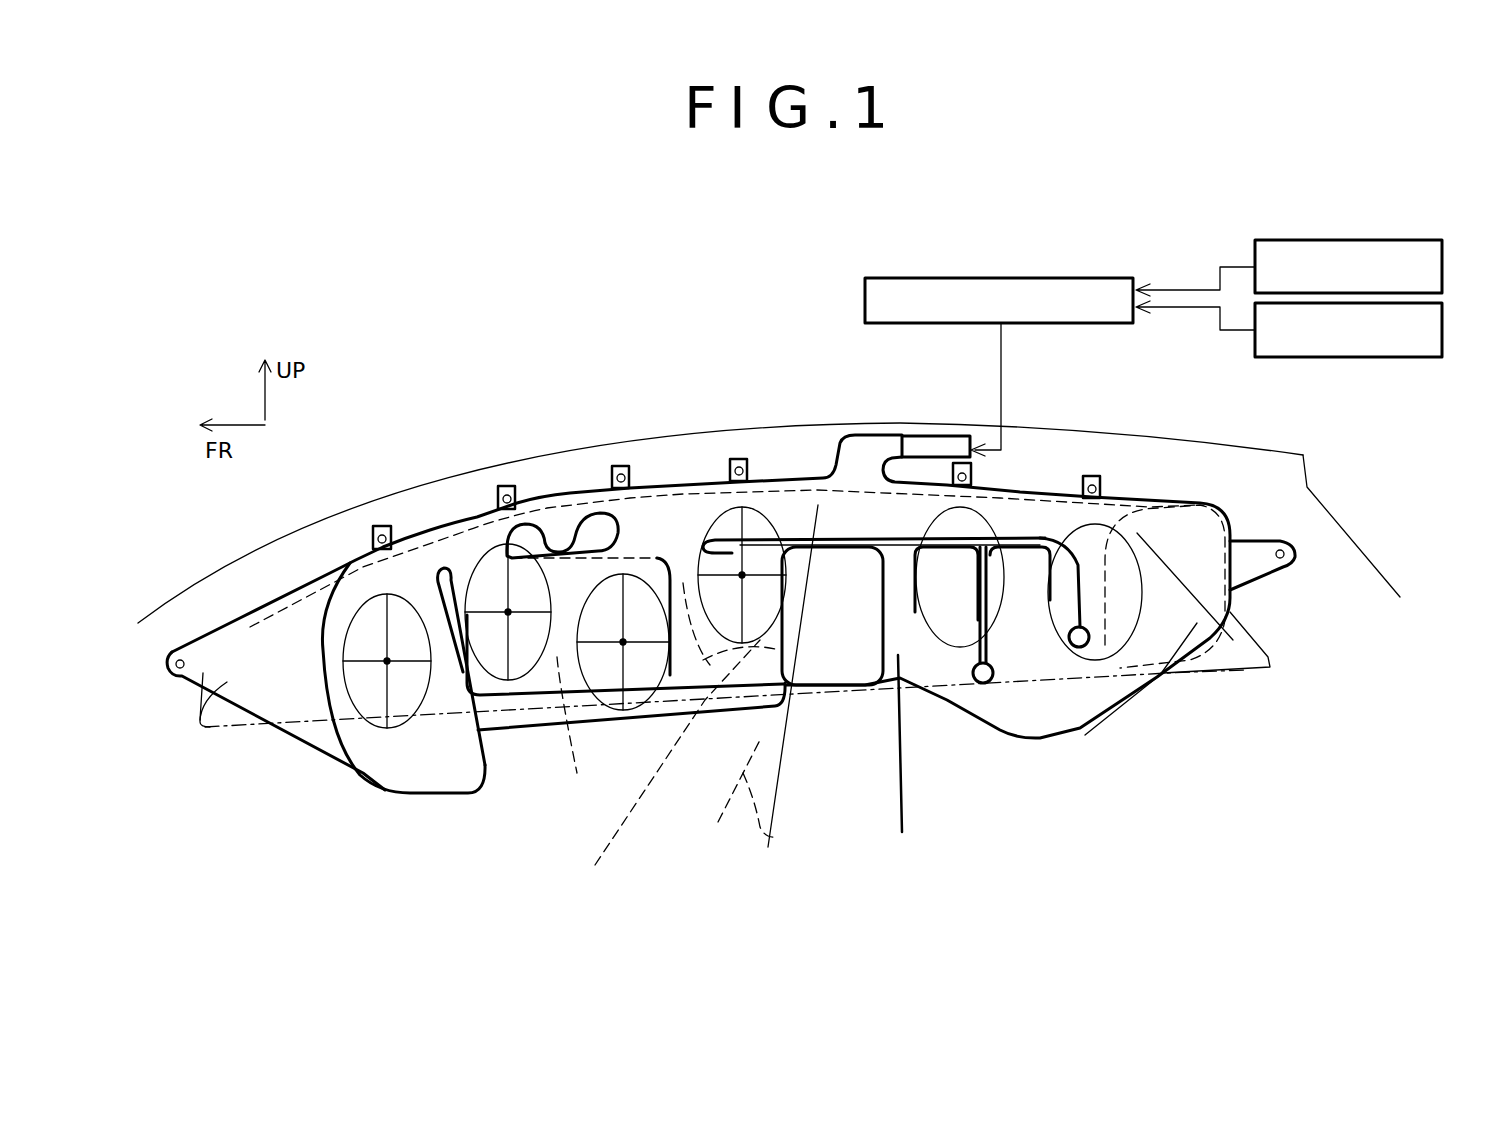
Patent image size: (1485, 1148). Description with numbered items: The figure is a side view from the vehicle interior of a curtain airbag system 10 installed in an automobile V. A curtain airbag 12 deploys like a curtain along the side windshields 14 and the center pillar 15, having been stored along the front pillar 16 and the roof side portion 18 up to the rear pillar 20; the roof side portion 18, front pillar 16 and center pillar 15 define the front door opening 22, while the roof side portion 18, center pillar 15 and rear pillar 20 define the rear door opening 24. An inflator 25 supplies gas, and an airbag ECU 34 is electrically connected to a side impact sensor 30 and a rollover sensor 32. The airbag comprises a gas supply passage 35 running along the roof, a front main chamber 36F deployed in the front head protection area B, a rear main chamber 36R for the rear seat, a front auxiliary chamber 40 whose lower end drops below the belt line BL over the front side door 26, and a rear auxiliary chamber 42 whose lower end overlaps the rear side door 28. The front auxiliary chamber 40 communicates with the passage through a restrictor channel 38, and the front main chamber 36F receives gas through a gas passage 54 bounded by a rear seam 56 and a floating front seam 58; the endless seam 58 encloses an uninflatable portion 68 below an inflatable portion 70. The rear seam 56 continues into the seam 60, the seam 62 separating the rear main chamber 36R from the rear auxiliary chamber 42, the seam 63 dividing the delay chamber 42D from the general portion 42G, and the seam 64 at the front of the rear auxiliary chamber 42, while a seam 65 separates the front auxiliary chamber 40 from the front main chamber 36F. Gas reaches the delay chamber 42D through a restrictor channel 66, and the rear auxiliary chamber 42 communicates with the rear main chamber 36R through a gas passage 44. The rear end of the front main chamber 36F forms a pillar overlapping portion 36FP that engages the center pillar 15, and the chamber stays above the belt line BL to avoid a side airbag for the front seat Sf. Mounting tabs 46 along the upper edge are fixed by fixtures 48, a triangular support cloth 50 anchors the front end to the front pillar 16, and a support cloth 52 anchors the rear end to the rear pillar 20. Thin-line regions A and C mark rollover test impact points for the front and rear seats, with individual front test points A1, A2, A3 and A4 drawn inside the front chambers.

The curtain airbag system 10 is at (377, 818).
The curtain airbag 12 is at (803, 462).
The side windshields 14 is at (1245, 665).
The center pillar 15 is at (905, 770).
The front pillar 16 is at (247, 553).
The roof side portion 18 is at (805, 495).
The rear pillar 20 is at (1335, 540).
The front door opening 22 is at (462, 535).
The rear door opening 24 is at (1080, 485).
The inflator 25 is at (940, 438).
The front side door 26 is at (470, 800).
The rear side door 28 is at (1085, 750).
The side impact sensor 30 is at (1290, 240).
The rollover sensor 32 is at (1400, 357).
The airbag ECU 34 is at (1008, 278).
The gas supply passage 35 is at (860, 500).
The front main chamber 36F is at (680, 690).
The pillar overlapping portion 36FP is at (823, 758).
The rear main chamber 36R is at (1175, 520).
The restrictor channel 38 is at (425, 525).
The front auxiliary chamber 40 is at (365, 765).
The rear auxiliary chamber 42 is at (940, 870).
The delay chamber 42D is at (965, 730).
The general portion 42G is at (1017, 700).
The gas passage 44 is at (1113, 690).
The mounting tabs 46 is at (373, 535).
The fixtures 48 is at (382, 530).
The support cloth 50 is at (205, 725).
The support cloth 52 is at (1268, 568).
The gas passage 54 is at (690, 500).
The rear seam 56 is at (800, 542).
The front seam 58 is at (567, 545).
The seam 60 is at (1025, 538).
The seam 62 is at (1058, 595).
The seam 63 is at (938, 618).
The seam 64 is at (867, 677).
The seam 65 is at (448, 720).
The restrictor channel 66 is at (988, 703).
The uninflatable portion 68 is at (633, 535).
The inflatable portion 70 is at (553, 532).
The test point regions A is at (765, 625).
The head protection cell 1 A1 is at (385, 660).
The head protection cell 2 A2 is at (628, 712).
The head protection cell 3 A3 is at (507, 612).
The head protection cell 4 A4 is at (744, 577).
The head protection area B is at (1215, 520).
The belt line BL is at (523, 730).
The test point regions C is at (1058, 490).
The front seat Sf is at (776, 838).
The automobile V is at (1303, 460).